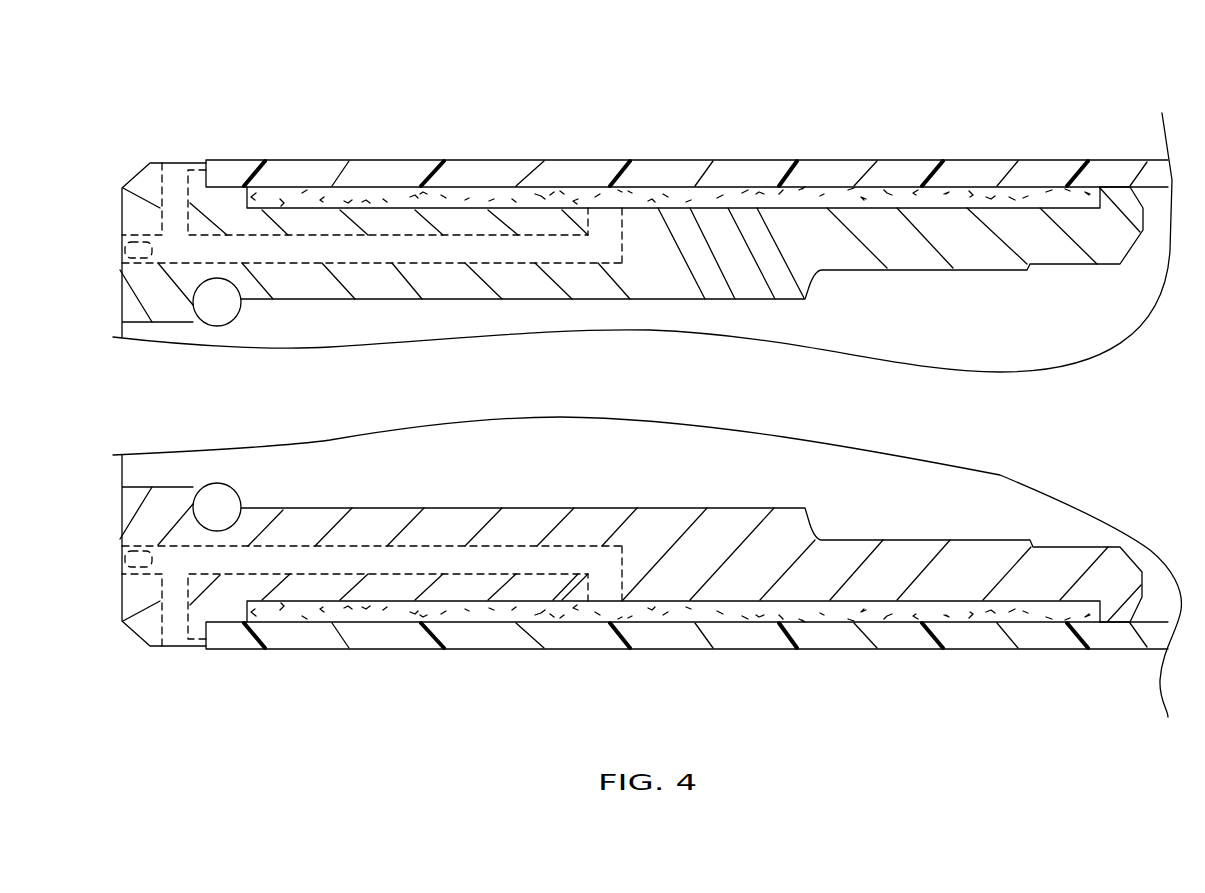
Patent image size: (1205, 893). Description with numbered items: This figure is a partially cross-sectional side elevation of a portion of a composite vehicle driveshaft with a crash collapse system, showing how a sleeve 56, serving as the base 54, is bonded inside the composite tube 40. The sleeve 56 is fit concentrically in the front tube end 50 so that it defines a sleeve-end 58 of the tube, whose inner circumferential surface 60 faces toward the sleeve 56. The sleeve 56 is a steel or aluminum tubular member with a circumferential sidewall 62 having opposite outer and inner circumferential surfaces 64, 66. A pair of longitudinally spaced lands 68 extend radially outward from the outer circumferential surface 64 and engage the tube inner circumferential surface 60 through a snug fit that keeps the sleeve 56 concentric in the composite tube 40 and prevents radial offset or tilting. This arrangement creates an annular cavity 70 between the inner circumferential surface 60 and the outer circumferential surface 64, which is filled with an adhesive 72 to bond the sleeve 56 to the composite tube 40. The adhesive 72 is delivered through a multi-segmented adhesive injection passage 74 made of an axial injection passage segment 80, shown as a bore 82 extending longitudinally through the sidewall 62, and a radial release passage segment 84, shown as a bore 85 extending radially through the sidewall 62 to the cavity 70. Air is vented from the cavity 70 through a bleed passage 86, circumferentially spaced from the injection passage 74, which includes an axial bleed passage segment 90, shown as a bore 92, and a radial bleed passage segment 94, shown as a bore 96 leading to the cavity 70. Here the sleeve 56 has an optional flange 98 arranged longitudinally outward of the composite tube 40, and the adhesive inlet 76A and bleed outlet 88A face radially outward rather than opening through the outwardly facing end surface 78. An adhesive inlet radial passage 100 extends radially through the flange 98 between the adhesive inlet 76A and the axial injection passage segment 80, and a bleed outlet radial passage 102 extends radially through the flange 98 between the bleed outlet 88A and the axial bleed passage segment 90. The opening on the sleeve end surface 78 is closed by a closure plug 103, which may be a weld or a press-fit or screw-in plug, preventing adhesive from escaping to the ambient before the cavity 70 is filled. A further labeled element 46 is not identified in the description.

The composite tube 40 is at (980, 80).
The housing 46 is at (868, 85).
The front tube end 50 is at (436, 78).
The base 54 is at (1137, 257).
The sleeve 56 is at (83, 173).
The sleeve-end 58 is at (752, 107).
The inner circumferential surface 60 is at (833, 180).
The circumferential sidewall 62 is at (967, 247).
The outer circumferential surface 64 is at (1039, 190).
The inner circumferential surface 66 is at (1083, 266).
The lands 68 is at (226, 186).
The annular cavity 70 is at (322, 158).
The adhesive 72 is at (383, 190).
The adhesive injection passage 74 is at (458, 262).
The adhesive inlet 76A is at (176, 163).
The end surface 78 is at (120, 290).
The axial injection passage segment 80 is at (303, 263).
The bore 82 is at (382, 262).
The radial release passage segment 84 is at (622, 247).
The bore 85 is at (637, 220).
The bleed passage 86 is at (447, 543).
The bleed outlet 88A is at (176, 648).
The axial bleed passage segment 90 is at (308, 543).
The bore 92 is at (370, 545).
The radial bleed passage segment 94 is at (593, 547).
The bore 96 is at (630, 577).
The flange 98 is at (122, 624).
The adhesive inlet radial passage 100 is at (160, 207).
The bleed outlet radial passage 102 is at (158, 590).
The closure plug 103 is at (120, 249).